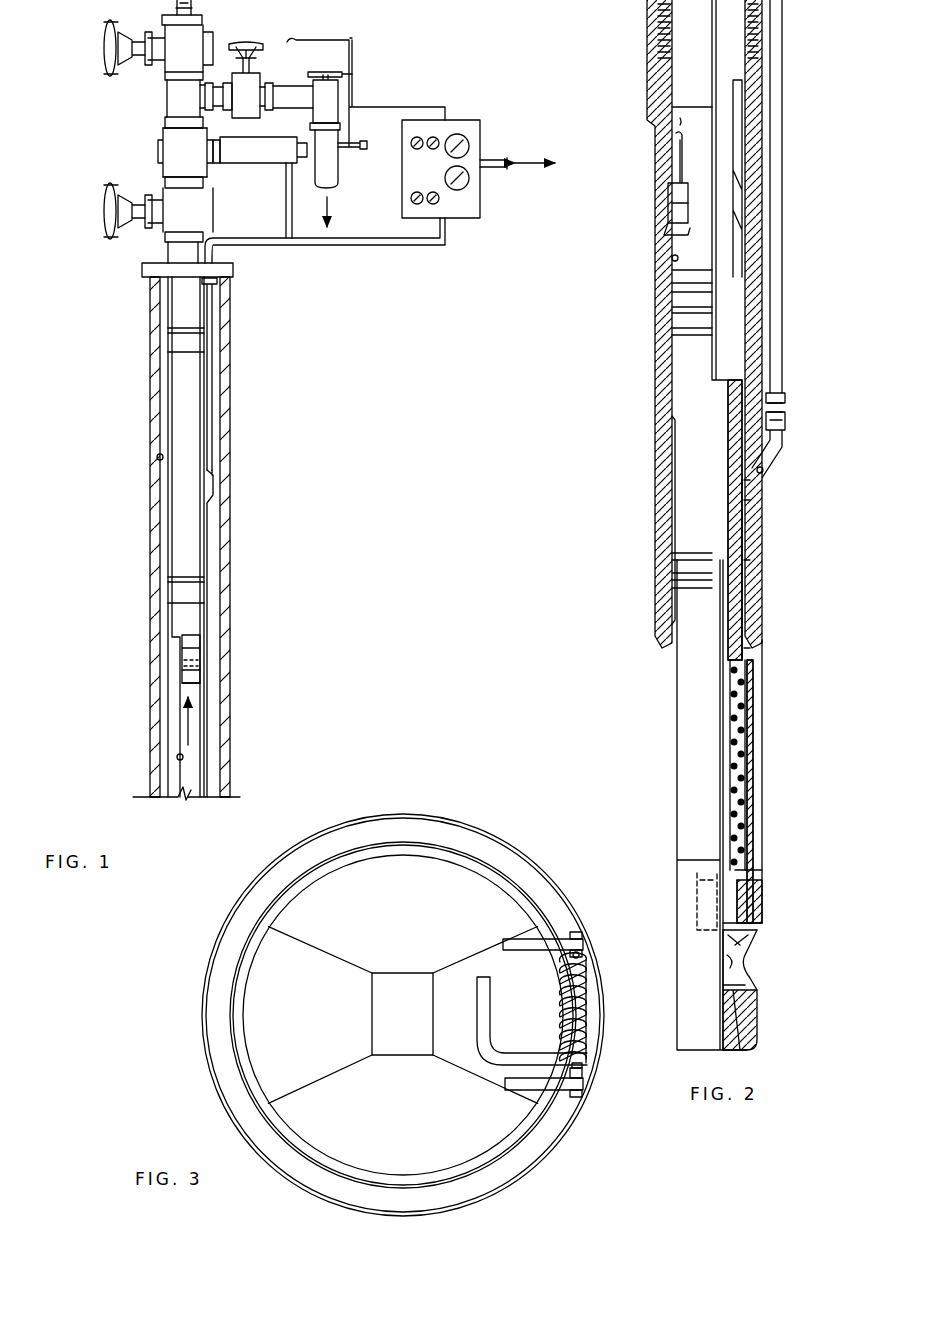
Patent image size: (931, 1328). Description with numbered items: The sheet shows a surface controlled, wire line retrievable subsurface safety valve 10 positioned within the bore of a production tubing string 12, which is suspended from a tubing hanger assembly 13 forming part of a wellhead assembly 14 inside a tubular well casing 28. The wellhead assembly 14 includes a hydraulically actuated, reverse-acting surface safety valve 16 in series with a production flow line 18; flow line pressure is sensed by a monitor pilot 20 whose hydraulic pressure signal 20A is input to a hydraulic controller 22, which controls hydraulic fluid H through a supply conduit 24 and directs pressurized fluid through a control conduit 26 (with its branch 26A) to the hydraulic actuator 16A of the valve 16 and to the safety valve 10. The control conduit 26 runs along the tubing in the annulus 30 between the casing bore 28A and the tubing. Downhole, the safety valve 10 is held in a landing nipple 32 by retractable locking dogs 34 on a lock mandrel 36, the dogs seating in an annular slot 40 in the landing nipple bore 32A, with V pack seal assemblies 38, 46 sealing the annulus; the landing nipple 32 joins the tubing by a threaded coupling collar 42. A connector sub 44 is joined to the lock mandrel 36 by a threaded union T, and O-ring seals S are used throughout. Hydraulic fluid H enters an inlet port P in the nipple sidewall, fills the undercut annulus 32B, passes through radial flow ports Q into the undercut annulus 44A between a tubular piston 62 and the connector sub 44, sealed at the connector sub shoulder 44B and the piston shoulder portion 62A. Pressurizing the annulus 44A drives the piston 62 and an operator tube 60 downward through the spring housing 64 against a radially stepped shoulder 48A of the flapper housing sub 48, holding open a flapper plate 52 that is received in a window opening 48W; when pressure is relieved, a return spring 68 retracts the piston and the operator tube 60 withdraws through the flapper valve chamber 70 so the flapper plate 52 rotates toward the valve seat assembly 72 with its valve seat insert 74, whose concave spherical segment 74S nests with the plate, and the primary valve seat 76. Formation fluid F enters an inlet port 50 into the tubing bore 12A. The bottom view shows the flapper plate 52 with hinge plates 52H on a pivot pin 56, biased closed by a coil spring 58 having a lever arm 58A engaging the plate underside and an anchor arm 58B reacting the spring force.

In FIG. 1, the subsurface safety valve 10 is at (197, 650).
In FIG. 2, the subsurface safety valve 10 is at (800, 668).
In FIG. 1, the production tubing string 12 is at (190, 300).
In FIG. 1, the production tubing bore 12A is at (178, 757).
In FIG. 1, the tubing hanger assembly 13 is at (143, 271).
In FIG. 1, the wellhead assembly 14 is at (128, 110).
In FIG. 1, the surface safety valve 16 is at (165, 150).
In FIG. 1, the hydraulic actuator 16A is at (253, 147).
In FIG. 1, the production flow line 18 is at (338, 162).
In FIG. 1, the monitor pilot 20 is at (356, 145).
In FIG. 1, the hydraulic pressure signal 20A is at (375, 107).
In FIG. 1, the hydraulic controller 22 is at (480, 126).
In FIG. 1, the supply conduit 24 is at (492, 168).
In FIG. 1, the control conduit 26 is at (368, 246).
In FIG. 2, the control conduit 26 is at (782, 15).
In FIG. 1, the conduit branch 26A is at (288, 202).
In FIG. 1, the well casing 28 is at (150, 410).
In FIG. 1, the casing bore 28A is at (157, 457).
In FIG. 1, the annulus 30 is at (215, 548).
In FIG. 1, the landing nipple 32 is at (208, 528).
In FIG. 2, the landing nipple 32 is at (655, 440).
In FIG. 2, the landing nipple bore 32A is at (672, 258).
In FIG. 2, the undercut annulus 32B is at (672, 480).
In FIG. 2, the locking dogs 34 is at (668, 203).
In FIG. 2, the lock mandrel 36 is at (760, 170).
In FIG. 2, the V pack seal assembly 38 is at (678, 297).
In FIG. 2, the annular slot 40 is at (668, 190).
In FIG. 1, the threaded coupling collar 42 is at (195, 333).
In FIG. 2, the threaded coupling collar 42 is at (648, 40).
In FIG. 2, the connector sub 44 is at (685, 365).
In FIG. 2, the undercut annulus 44A is at (750, 540).
In FIG. 2, the connector sub shoulder 44B is at (782, 406).
In FIG. 2, the V pack seal assembly 46 is at (680, 580).
In FIG. 1, the flapper housing sub 48 is at (182, 675).
In FIG. 2, the flapper housing sub 48 is at (690, 975).
In FIG. 2, the radially stepped shoulder 48A is at (757, 1010).
In FIG. 2, the window opening 48W is at (752, 975).
In FIG. 1, the inlet port 50 is at (200, 685).
In FIG. 2, the inlet port 50 is at (745, 1050).
In FIG. 1, the flapper plate 52 is at (205, 668).
In FIG. 2, the flapper plate 52 is at (745, 948).
In FIG. 3, the flapper plate 52 is at (402, 1002).
In FIG. 3, the hinge plates 52H is at (530, 940).
In FIG. 3, the pivot pin 56 is at (580, 1078).
In FIG. 2, the coil spring 58 is at (750, 930).
In FIG. 3, the coil spring 58 is at (580, 1020).
In FIG. 3, the lever arm 58A is at (490, 1010).
In FIG. 3, the anchor arm 58B is at (578, 950).
In FIG. 2, the operator tube 60 is at (752, 850).
In FIG. 2, the tubular piston 62 is at (730, 612).
In FIG. 2, the piston shoulder portion 62A is at (730, 535).
In FIG. 2, the spring housing 64 is at (688, 705).
In FIG. 2, the return spring 68 is at (745, 780).
In FIG. 2, the flapper valve chamber 70 is at (725, 957).
In FIG. 2, the valve seat assembly 72 is at (810, 870).
In FIG. 3, the valve seat insert 74 is at (372, 840).
In FIG. 3, the concave spherical segment 74S is at (415, 855).
In FIG. 2, the primary valve seat 76 is at (756, 875).
In FIG. 1, the formation fluid F is at (328, 208).
In FIG. 1, the hydraulic fluid H is at (532, 162).
In FIG. 1, the threaded union T is at (175, 352).
In FIG. 2, the threaded union T is at (652, 85).
In FIG. 2, the O-ring seal S is at (750, 508).
In FIG. 2, the inlet port P is at (765, 475).
In FIG. 2, the radial flow port Q is at (748, 523).